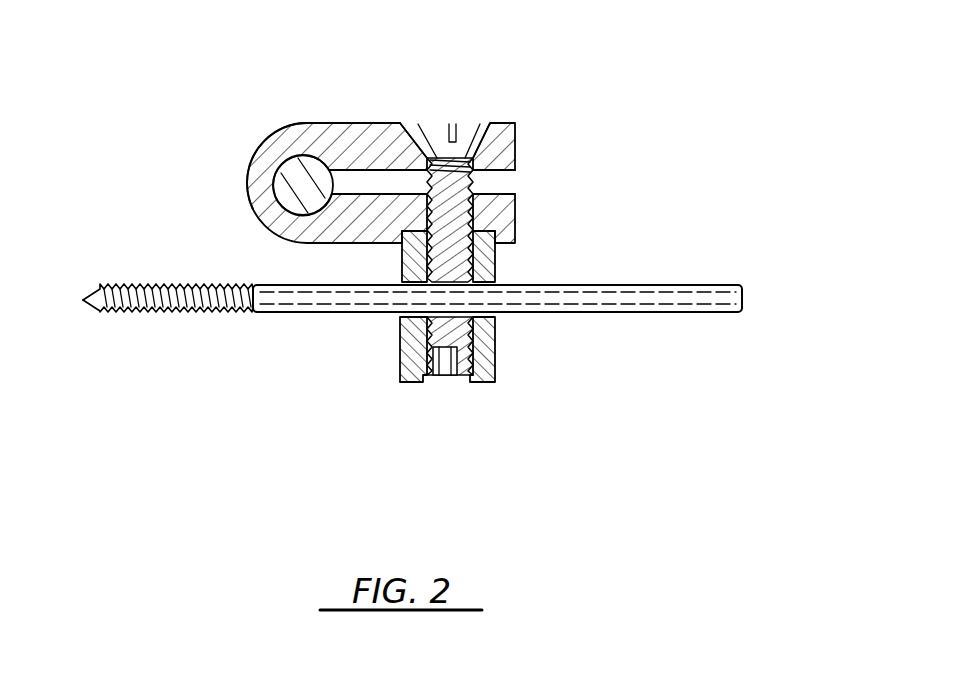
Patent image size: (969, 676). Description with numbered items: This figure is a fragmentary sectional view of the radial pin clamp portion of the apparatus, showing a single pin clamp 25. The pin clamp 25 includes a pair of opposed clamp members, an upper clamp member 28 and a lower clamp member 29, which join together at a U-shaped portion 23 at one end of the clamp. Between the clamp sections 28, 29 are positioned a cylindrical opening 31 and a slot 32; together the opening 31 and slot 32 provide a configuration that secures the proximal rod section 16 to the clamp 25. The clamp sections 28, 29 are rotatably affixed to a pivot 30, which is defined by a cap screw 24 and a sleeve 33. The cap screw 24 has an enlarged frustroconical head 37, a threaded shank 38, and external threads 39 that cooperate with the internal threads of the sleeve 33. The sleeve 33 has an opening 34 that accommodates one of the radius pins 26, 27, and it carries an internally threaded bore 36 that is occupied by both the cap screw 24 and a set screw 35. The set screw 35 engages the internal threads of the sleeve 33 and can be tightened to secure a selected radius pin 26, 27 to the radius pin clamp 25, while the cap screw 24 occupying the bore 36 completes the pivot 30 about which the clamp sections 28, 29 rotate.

The proximal rod section 16 is at (294, 156).
The U-shaped portion 23 is at (263, 157).
The cap screw 24 is at (473, 123).
The pin clamp 25 is at (247, 181).
The radius pin 26 is at (302, 313).
The radius pin 27 is at (227, 350).
The upper clamp member 28 is at (373, 148).
The lower clamp member 29 is at (300, 243).
The pivot 30 is at (496, 253).
The cylindrical opening 31 is at (261, 156).
The slot 32 is at (355, 180).
The sleeve 33 is at (496, 364).
The opening 34 is at (502, 320).
The set screw 35 is at (448, 376).
The internally threaded bore 36 is at (500, 285).
The frustroconical head 37 is at (452, 124).
The threaded shank 38 is at (503, 194).
The external threads 39 is at (500, 170).